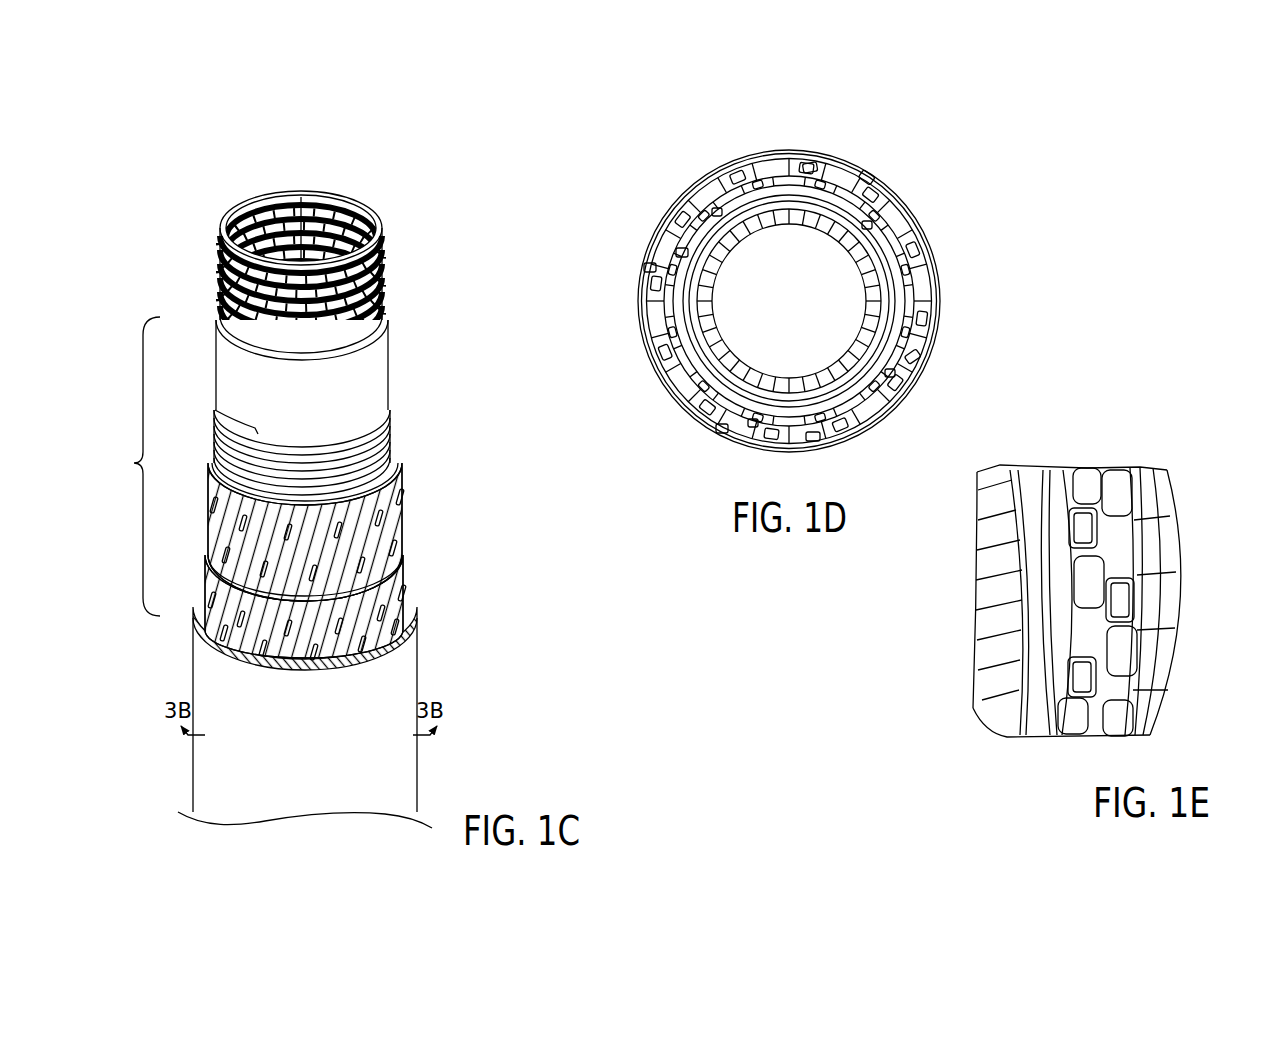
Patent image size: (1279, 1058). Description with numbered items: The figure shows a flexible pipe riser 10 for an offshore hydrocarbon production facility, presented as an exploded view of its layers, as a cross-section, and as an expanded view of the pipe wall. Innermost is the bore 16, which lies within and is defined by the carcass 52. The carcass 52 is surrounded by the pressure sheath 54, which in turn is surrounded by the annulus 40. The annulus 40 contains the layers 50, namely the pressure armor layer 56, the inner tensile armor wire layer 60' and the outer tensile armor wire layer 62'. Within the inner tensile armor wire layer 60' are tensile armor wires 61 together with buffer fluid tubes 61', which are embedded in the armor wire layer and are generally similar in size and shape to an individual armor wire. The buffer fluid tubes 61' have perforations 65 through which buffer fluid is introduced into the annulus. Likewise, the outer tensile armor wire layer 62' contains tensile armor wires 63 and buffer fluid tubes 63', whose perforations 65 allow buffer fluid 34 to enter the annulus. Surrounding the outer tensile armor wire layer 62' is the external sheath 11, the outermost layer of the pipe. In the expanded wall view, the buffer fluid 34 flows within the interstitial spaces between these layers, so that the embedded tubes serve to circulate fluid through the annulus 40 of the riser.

In FIG. 1C, the flexible pipe riser 10 is at (150, 193).
In FIG. 1C, the external sheath 11 is at (290, 749).
In FIG. 1D, the external sheath 11 is at (940, 323).
In FIG. 1E, the external sheath 11 is at (1133, 488).
In FIG. 1C, the bore 16 is at (330, 197).
In FIG. 1D, the bore 16 is at (776, 312).
In FIG. 1D, the buffer fluid 34 is at (905, 220).
In FIG. 1E, the buffer fluid 34 is at (1127, 590).
In FIG. 1C, the annulus 40 is at (130, 466).
In FIG. 1D, the annulus 40 is at (652, 350).
In FIG. 1C, the layers 50 is at (446, 456).
In FIG. 1C, the carcass 52 is at (385, 277).
In FIG. 1D, the carcass 52 is at (787, 218).
In FIG. 1E, the carcass 52 is at (1000, 622).
In FIG. 1C, the pressure sheath 54 is at (385, 377).
In FIG. 1D, the pressure sheath 54 is at (733, 217).
In FIG. 1E, the pressure sheath 54 is at (1060, 598).
In FIG. 1C, the pressure armor layer 56 is at (393, 435).
In FIG. 1D, the pressure armor layer 56 is at (760, 200).
In FIG. 1E, the pressure armor layer 56 is at (1033, 570).
In FIG. 1C, the inner tensile armor wire layer 60' is at (344, 532).
In FIG. 1D, the inner tensile armor wire layer 60' is at (818, 301).
In FIG. 1C, the tensile armor wires 61 is at (210, 506).
In FIG. 1D, the tensile armor wires 61 is at (737, 317).
In FIG. 1C, the buffer fluid tubes 61' is at (223, 550).
In FIG. 1D, the buffer fluid tubes 61' is at (859, 299).
In FIG. 1E, the buffer fluid tubes 61' is at (1160, 550).
In FIG. 1C, the outer tensile armor wire layer 62' is at (354, 593).
In FIG. 1D, the outer tensile armor wire layer 62' is at (831, 301).
In FIG. 1C, the tensile armor wires 63 is at (411, 610).
In FIG. 1D, the tensile armor wires 63 is at (841, 299).
In FIG. 1E, the tensile armor wires 63 is at (1154, 602).
In FIG. 1C, the buffer fluid tubes 63' is at (408, 647).
In FIG. 1D, the buffer fluid tubes 63' is at (695, 327).
In FIG. 1E, the buffer fluid tubes 63' is at (1183, 564).
In FIG. 1C, the perforations 65 is at (335, 538).
In FIG. 1E, the perforations 65 is at (1097, 527).